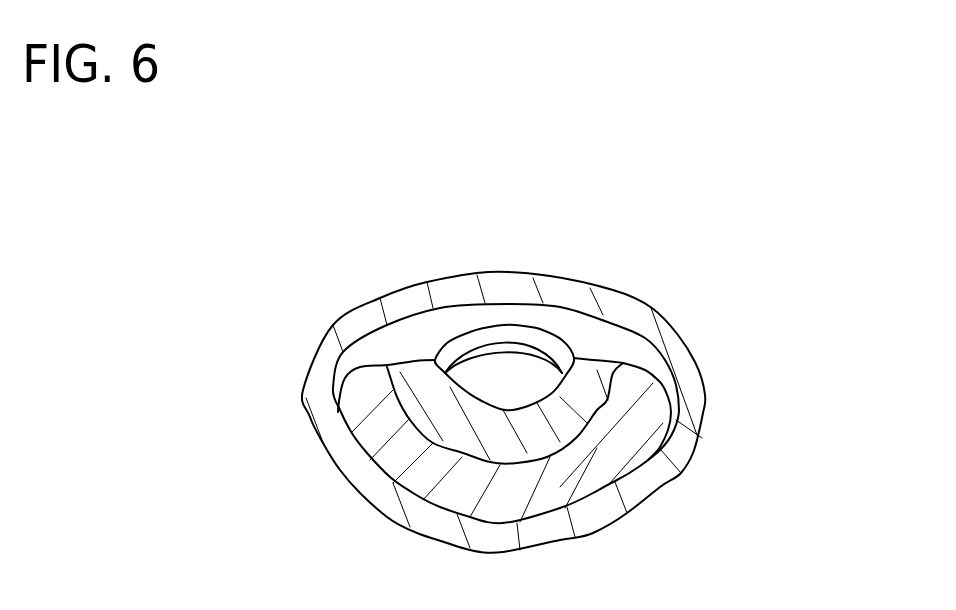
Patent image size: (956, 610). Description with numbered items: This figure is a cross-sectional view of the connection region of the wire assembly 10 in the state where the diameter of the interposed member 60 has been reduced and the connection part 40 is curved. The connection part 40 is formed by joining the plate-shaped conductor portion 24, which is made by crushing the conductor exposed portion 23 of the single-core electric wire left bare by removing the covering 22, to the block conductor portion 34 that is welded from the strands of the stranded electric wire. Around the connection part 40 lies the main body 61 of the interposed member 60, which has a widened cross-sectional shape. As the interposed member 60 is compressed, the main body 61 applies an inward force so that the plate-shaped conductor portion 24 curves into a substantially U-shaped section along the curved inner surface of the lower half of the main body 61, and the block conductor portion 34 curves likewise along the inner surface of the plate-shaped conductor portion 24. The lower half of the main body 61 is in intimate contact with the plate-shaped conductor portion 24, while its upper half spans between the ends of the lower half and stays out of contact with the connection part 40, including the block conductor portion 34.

The valve body / seal member 10 is at (482, 157).
The covering 22 is at (538, 341).
The conductor exposed portion 23 is at (483, 377).
The plate-shaped conductor portion 24 is at (647, 410).
The block conductor portion 34 is at (603, 370).
The connection part 40 is at (798, 293).
The interposed member 60 is at (523, 282).
The main body 61 is at (504, 362).